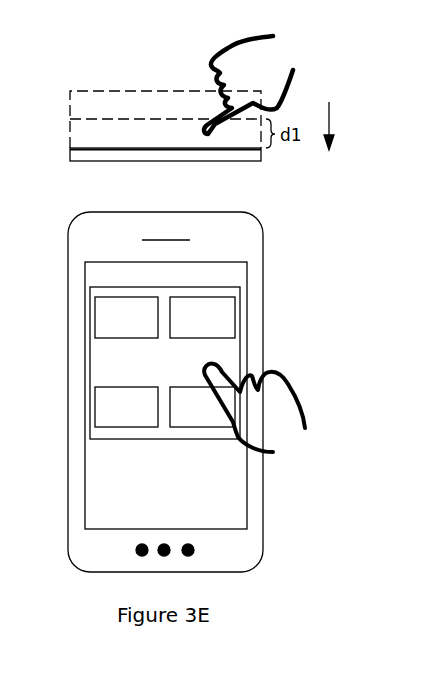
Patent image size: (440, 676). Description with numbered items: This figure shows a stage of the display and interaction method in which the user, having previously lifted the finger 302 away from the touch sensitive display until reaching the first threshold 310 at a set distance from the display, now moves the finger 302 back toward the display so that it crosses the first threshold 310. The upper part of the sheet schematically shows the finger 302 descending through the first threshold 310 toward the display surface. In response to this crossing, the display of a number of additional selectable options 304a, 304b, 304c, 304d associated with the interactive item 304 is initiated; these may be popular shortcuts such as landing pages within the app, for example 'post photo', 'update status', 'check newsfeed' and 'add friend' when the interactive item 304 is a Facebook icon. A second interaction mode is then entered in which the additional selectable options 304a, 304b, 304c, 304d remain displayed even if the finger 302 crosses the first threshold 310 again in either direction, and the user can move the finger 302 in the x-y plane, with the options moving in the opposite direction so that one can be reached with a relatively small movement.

The finger 302 is at (231, 392).
The interactive item 304 is at (165, 363).
The additional selectable option 304a is at (126, 317).
The additional selectable option 304b is at (202, 317).
The additional selectable option 304c is at (126, 407).
The additional selectable option 304d is at (202, 407).
The first threshold 310 is at (70, 119).